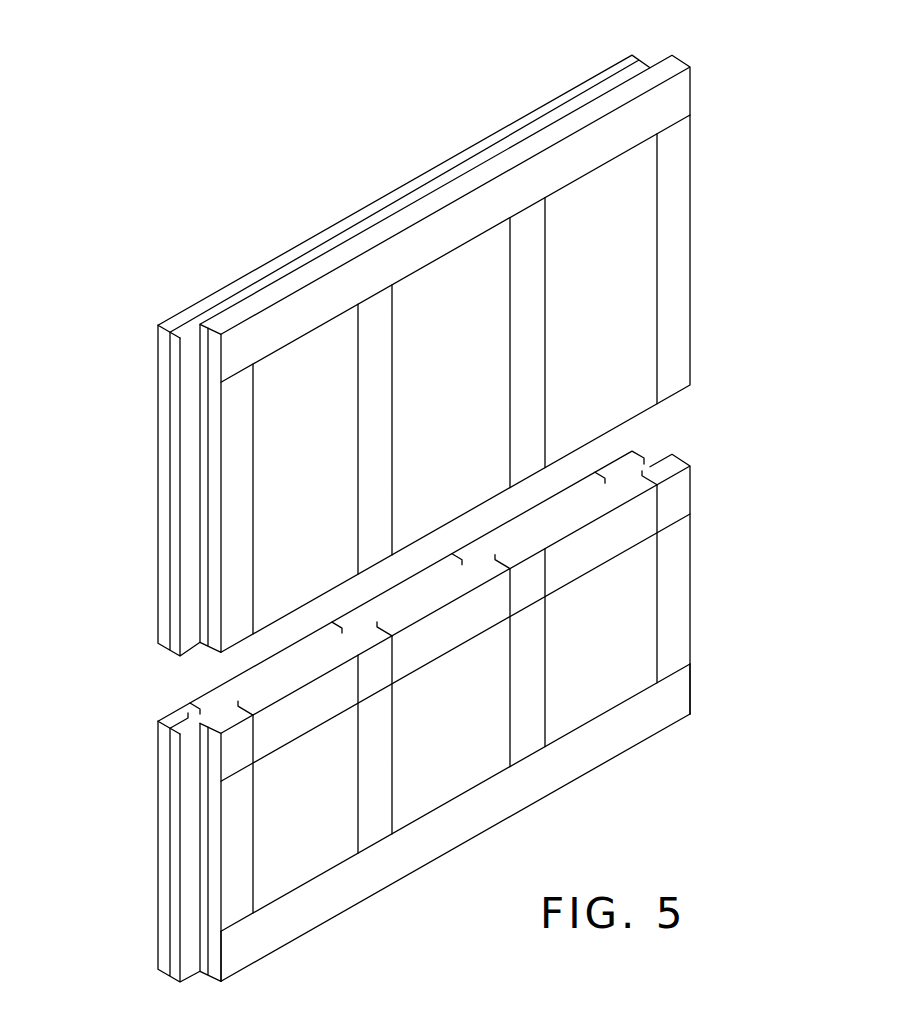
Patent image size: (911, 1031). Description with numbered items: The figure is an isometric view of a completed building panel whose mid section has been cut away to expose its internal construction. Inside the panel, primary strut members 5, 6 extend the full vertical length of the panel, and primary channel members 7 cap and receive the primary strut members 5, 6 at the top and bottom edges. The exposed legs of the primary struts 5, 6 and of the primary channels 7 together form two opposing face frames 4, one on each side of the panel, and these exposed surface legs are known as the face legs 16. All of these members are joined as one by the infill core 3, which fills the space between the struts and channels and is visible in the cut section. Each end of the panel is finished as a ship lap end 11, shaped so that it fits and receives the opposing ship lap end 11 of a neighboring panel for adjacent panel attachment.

The infill core 3 is at (495, 305).
The face frame 4 is at (687, 672).
The primary strut member 5 is at (370, 387).
The primary strut member 6 is at (163, 605).
The primary channel member 7 is at (632, 55).
The ship lap end 11 is at (190, 485).
The face leg 16 is at (680, 165).